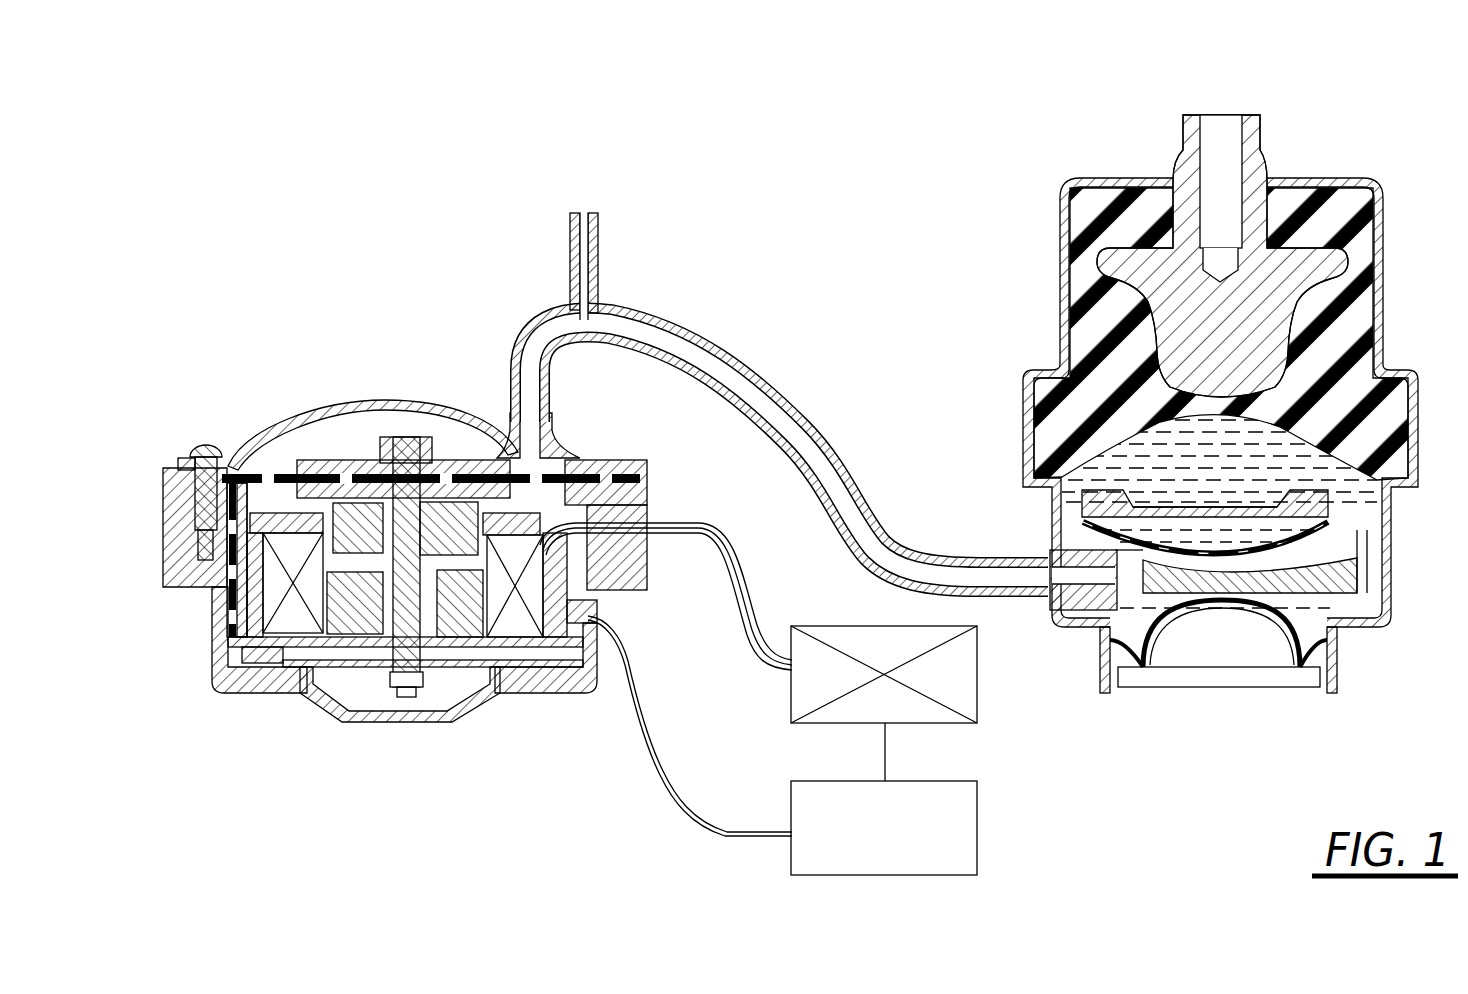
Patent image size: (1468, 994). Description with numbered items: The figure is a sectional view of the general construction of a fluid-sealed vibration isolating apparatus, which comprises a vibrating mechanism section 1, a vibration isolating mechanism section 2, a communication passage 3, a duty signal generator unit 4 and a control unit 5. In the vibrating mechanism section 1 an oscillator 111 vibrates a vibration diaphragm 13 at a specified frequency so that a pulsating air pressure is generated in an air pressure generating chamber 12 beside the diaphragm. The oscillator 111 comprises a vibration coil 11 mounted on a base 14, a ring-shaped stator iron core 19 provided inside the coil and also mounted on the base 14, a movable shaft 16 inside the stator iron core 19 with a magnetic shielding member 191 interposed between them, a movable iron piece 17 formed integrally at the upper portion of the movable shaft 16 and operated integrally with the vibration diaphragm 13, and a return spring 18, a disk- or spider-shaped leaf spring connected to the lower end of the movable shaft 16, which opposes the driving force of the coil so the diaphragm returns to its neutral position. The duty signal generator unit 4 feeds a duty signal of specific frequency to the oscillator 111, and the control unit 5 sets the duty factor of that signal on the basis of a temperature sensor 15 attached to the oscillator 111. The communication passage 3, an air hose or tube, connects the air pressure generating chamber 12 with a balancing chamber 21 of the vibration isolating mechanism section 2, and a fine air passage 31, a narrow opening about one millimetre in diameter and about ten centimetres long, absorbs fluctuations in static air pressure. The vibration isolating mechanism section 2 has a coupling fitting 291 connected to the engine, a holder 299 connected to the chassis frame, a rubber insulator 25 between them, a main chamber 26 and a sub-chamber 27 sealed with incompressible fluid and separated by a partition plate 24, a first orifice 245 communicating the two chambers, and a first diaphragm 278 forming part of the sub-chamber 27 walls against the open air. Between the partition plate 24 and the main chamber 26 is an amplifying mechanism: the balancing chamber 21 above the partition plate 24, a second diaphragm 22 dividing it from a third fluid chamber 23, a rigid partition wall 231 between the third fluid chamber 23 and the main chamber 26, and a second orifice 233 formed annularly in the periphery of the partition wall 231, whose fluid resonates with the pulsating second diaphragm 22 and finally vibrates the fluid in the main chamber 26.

The vibrating mechanism section 1 is at (365, 293).
The vibration isolating mechanism section 2 is at (998, 243).
The communication passage 3 is at (722, 348).
The duty signal generator unit 4 is at (836, 626).
The control unit 5 is at (978, 818).
The vibration coil 11 is at (235, 590).
The air pressure generating chamber 12 is at (327, 437).
The vibration diaphragm 13 is at (500, 440).
The base 14 is at (318, 690).
The temperature sensor 15 is at (598, 609).
The movable shaft 16 is at (405, 460).
The movable iron piece 17 is at (290, 456).
The return spring 18 is at (355, 685).
The ring-shaped stator iron core 19 is at (478, 655).
The balancing chamber 21 is at (1096, 622).
The second diaphragm 22 is at (1115, 547).
The third fluid chamber 23 is at (1238, 512).
The partition plate 24 is at (1362, 598).
The insulator 25 is at (1340, 356).
The main chamber 26 is at (1400, 446).
The sub-chamber 27 is at (1322, 648).
The fine air passage 31 is at (600, 249).
The oscillator 111 is at (542, 500).
The magnetic shielding member 191 is at (462, 680).
The partition wall 231 is at (1178, 492).
The second orifice 233 is at (1085, 510).
The first orifice 245 is at (1395, 580).
The first diaphragm 278 is at (1268, 668).
The coupling fitting 291 is at (1195, 138).
The holder 299 is at (1030, 430).